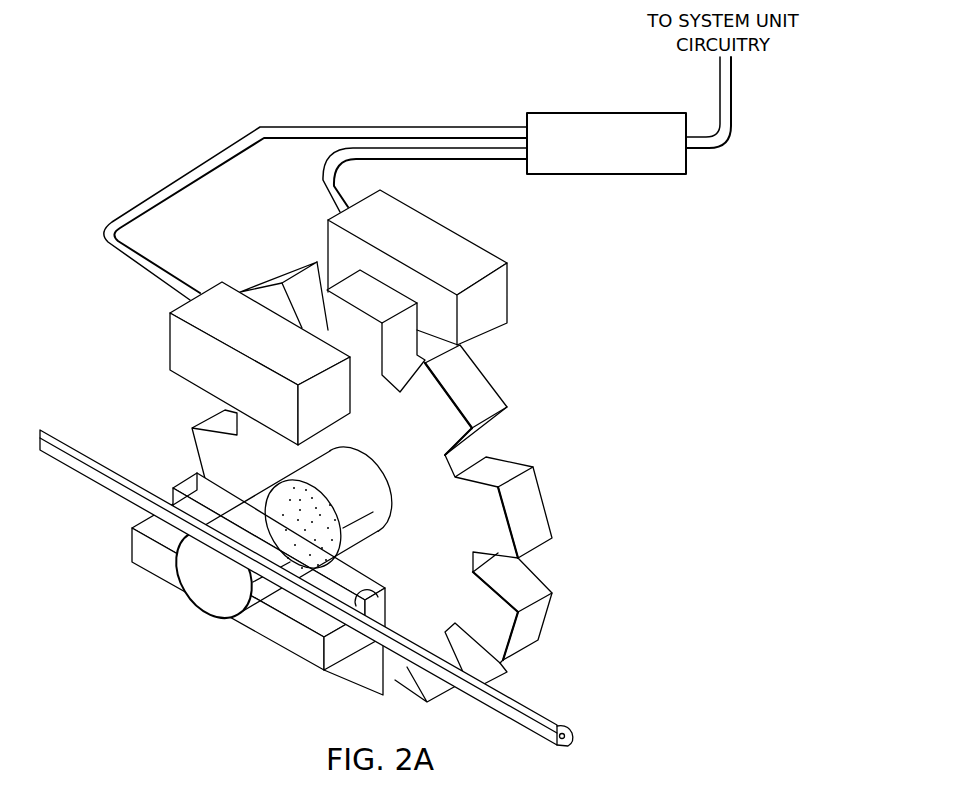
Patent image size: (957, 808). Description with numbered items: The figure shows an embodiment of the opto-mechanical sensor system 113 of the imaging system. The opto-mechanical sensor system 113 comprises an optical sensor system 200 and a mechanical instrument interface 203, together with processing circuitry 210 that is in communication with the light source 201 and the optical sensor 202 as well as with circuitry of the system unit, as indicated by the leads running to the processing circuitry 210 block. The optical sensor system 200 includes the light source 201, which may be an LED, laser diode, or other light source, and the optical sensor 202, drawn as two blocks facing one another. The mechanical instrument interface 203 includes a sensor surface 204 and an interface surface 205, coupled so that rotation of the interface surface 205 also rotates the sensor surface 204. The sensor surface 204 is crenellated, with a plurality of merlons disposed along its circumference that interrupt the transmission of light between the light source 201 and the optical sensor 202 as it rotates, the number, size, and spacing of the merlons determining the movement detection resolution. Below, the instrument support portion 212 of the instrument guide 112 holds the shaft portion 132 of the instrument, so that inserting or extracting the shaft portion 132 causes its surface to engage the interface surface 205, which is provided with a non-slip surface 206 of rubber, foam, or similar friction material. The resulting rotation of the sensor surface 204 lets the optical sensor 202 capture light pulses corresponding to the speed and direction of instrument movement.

The processing circuitry 210 is at (607, 113).
The opto-mechanical sensor system 113 is at (576, 252).
The optical sensor system 200 is at (260, 243).
The light source 201 is at (210, 296).
The optical sensor 202 is at (450, 232).
The sensor surface 204 is at (482, 378).
The mechanical instrument interface 203 is at (580, 556).
The interface surface 205 is at (285, 526).
The non-slip surface 206 is at (268, 497).
The instrument support portion 212 is at (370, 602).
The instrument guide 112 is at (280, 642).
The shaft portion 132 is at (540, 740).